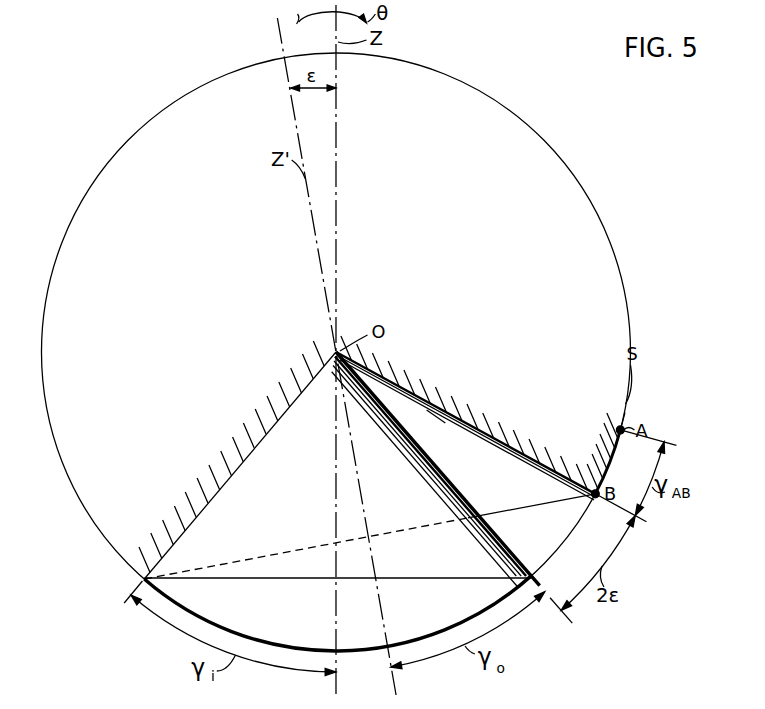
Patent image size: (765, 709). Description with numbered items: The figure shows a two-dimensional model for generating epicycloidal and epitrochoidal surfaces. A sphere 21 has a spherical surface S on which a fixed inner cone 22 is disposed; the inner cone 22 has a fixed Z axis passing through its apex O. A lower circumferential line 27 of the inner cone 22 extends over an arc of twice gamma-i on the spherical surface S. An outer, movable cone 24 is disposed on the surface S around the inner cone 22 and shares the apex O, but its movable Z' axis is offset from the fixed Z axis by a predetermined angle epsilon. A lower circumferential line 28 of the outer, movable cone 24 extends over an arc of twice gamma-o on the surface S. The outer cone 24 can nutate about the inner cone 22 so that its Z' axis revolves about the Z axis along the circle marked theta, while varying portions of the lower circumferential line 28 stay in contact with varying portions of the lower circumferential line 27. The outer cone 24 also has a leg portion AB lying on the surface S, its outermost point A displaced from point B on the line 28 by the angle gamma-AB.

The sphere 21 is at (587, 189).
The fixed inner cone 22 is at (272, 509).
The outer, movable cone 24 is at (458, 414).
The lower circumferential line 27 is at (270, 579).
The lower circumferential line 28 is at (525, 508).